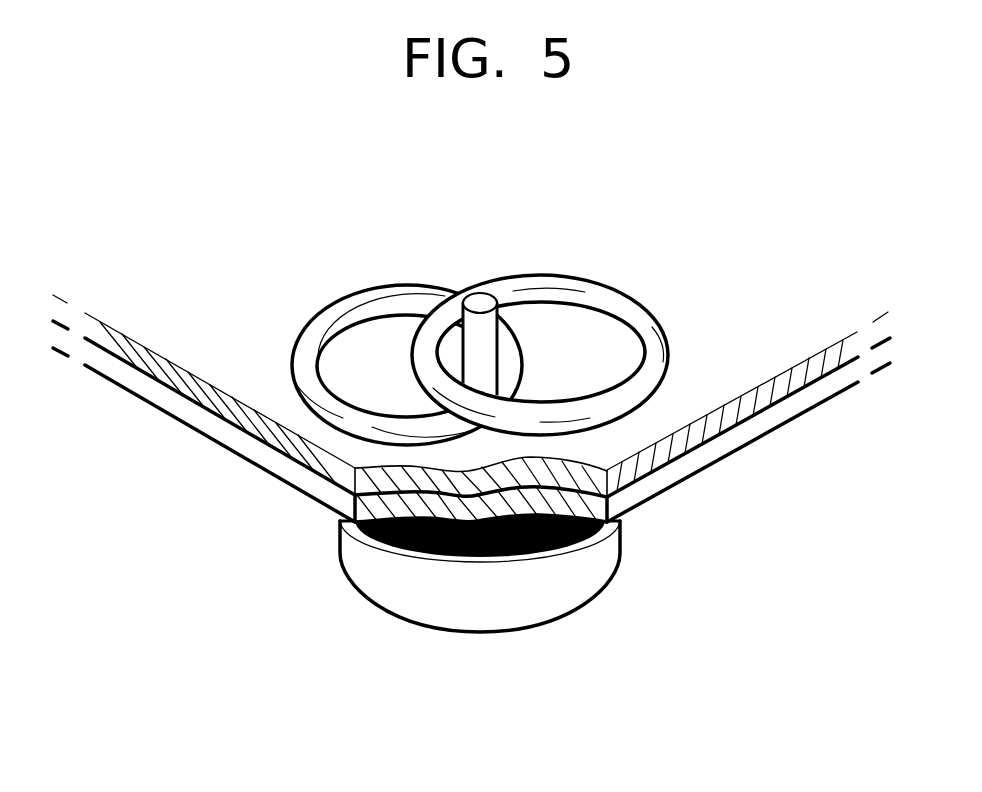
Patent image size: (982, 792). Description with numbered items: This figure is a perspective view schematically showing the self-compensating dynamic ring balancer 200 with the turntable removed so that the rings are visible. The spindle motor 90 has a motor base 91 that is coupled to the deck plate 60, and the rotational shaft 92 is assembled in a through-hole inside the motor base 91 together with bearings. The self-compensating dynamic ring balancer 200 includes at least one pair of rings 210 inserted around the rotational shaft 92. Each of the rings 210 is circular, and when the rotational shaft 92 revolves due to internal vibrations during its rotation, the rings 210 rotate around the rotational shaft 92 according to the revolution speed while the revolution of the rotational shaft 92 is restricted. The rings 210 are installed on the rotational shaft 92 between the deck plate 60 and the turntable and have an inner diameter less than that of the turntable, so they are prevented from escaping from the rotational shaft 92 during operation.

The deck plate 60 is at (845, 337).
The spindle motor 90 is at (630, 535).
The motor base 91 is at (837, 385).
The rotational shaft 92 is at (489, 296).
The self-compensating dynamic ring balancer 200 is at (583, 268).
The rings 210 is at (652, 327).